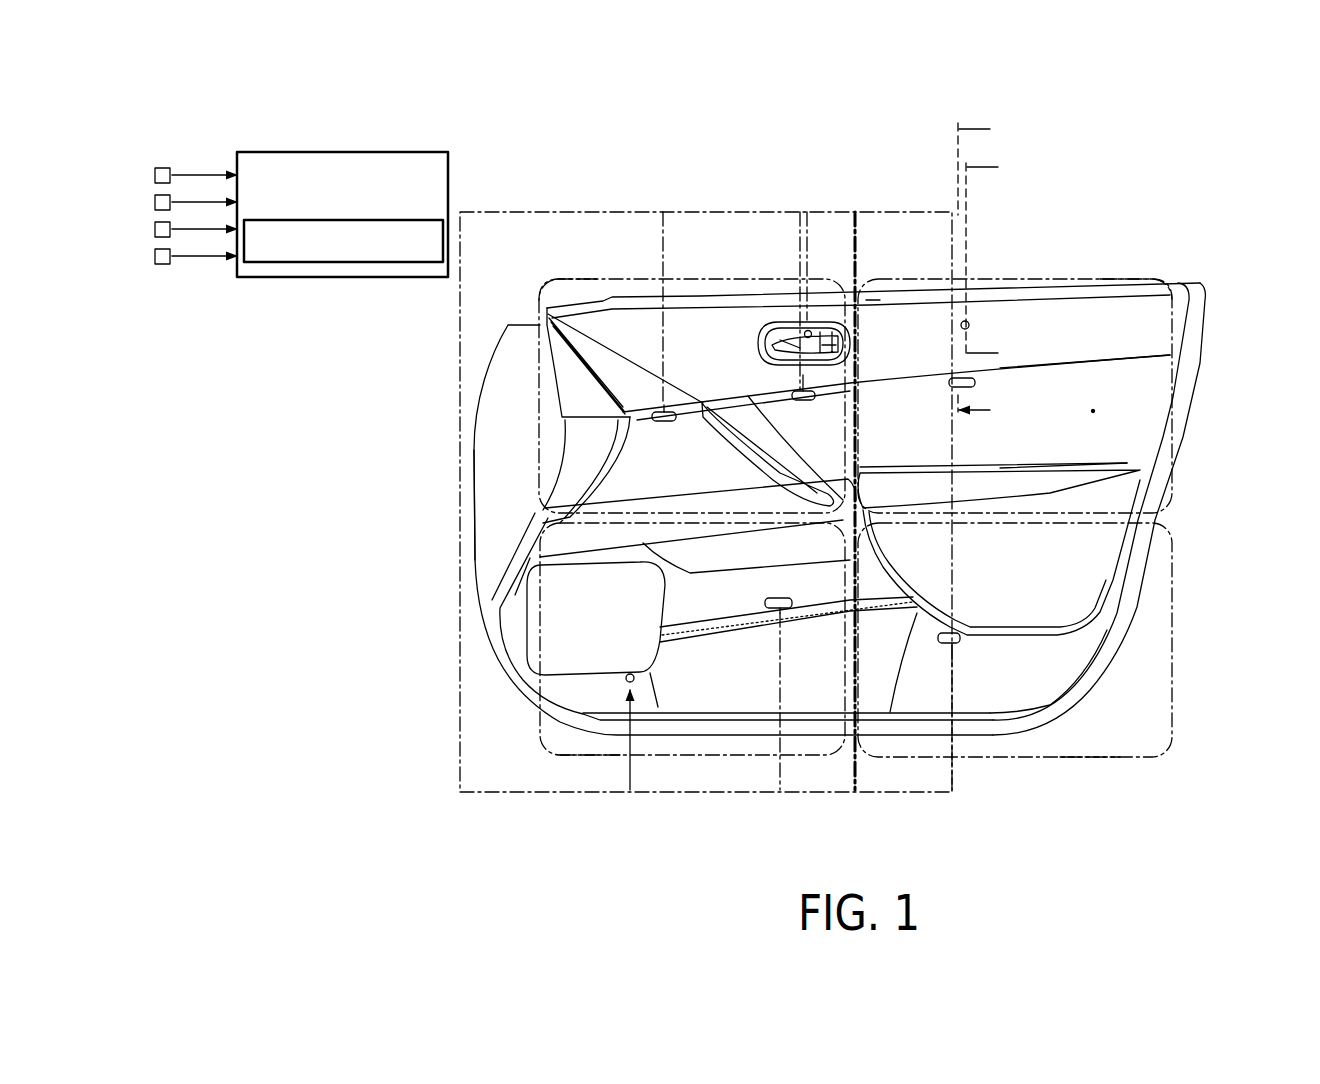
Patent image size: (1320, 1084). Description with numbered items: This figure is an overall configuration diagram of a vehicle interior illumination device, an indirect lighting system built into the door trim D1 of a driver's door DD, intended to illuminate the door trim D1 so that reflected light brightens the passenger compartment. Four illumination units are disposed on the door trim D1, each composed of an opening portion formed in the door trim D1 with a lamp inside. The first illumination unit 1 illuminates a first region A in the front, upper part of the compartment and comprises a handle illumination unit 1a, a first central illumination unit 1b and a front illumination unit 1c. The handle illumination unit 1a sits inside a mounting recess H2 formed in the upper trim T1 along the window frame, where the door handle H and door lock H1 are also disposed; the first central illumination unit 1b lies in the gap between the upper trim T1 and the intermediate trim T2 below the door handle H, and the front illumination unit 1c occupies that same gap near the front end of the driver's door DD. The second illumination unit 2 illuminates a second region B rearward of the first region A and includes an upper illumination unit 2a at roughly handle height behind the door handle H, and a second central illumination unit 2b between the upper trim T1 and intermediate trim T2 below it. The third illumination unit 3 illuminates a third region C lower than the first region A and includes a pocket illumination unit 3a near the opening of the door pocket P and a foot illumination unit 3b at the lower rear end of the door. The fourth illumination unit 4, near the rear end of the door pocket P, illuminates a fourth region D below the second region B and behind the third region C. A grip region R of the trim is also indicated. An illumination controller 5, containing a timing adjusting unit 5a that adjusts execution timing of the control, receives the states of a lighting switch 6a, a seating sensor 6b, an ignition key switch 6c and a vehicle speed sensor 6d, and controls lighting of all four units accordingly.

The first illumination unit 1 is at (702, 158).
The handle illumination unit 1a is at (824, 322).
The first central illumination unit 1b is at (872, 330).
The front illumination unit 1c is at (690, 398).
The second illumination unit 2 is at (1118, 212).
The upper illumination unit 2a is at (970, 325).
The second central illumination unit 2b is at (976, 383).
The third illumination unit 3 is at (750, 843).
The pocket illumination unit 3a is at (765, 604).
The foot illumination unit 3b is at (650, 673).
The fourth illumination unit 4 is at (960, 642).
The illumination controller 5 is at (448, 176).
The timing adjusting unit 5a is at (268, 263).
The lighting switch 6a is at (153, 175).
The seating sensor 6b is at (153, 202).
The ignition key switch 6c is at (153, 229).
The vehicle speed sensor 6d is at (153, 256).
The first region A is at (590, 278).
The second region B is at (1130, 277).
The third region C is at (580, 780).
The fourth region D is at (1095, 760).
The driver's door DD is at (557, 296).
The door handle H is at (758, 337).
The door lock H1 is at (822, 323).
The mounting recess H2 is at (797, 320).
The pull grip R is at (722, 500).
The door pocket P is at (808, 664).
The upper trim T1 is at (1180, 330).
The intermediate trim T2 is at (1055, 447).
The door trim D1 is at (1093, 411).